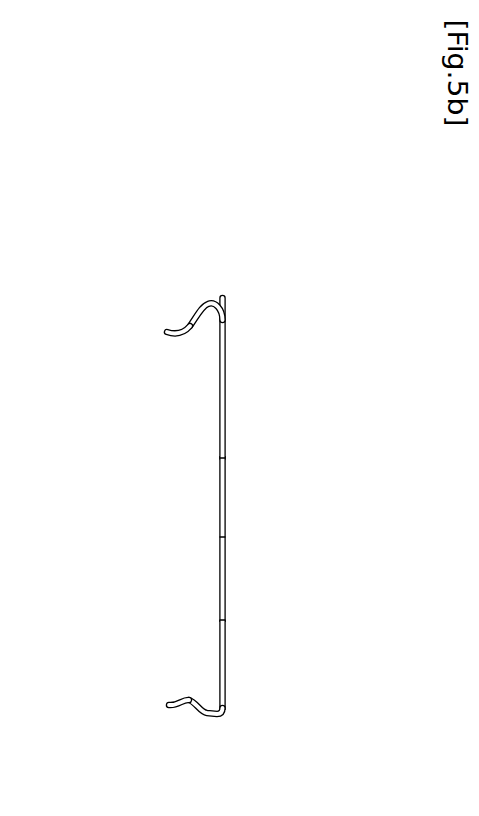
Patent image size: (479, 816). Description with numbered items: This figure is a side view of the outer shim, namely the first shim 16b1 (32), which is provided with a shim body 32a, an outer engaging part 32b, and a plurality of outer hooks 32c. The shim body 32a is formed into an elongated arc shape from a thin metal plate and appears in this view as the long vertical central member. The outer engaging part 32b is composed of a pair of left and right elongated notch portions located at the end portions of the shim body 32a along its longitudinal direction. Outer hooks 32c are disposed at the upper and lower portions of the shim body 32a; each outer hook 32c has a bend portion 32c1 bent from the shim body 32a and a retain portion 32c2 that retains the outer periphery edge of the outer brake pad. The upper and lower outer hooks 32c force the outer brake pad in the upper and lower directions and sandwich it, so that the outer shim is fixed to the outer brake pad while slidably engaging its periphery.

The first shim 16b1 is at (235, 490).
The first shim 32 is at (235, 490).
The shim body 32a is at (226, 410).
The outer engaging part 32b is at (226, 480).
The outer hooks 32c is at (199, 490).
The bend portion 32c1 is at (204, 302).
The retain portion 32c2 is at (176, 340).